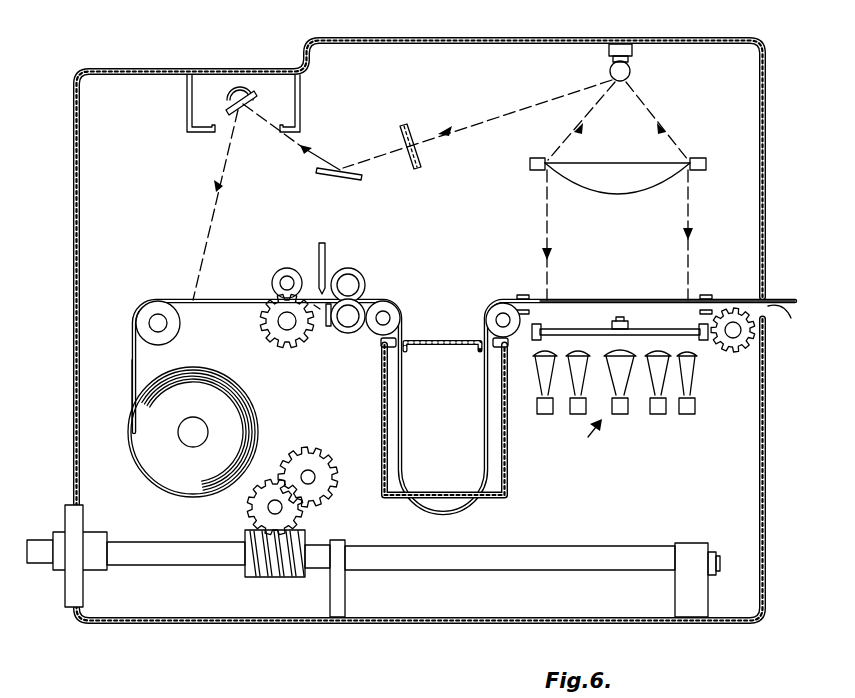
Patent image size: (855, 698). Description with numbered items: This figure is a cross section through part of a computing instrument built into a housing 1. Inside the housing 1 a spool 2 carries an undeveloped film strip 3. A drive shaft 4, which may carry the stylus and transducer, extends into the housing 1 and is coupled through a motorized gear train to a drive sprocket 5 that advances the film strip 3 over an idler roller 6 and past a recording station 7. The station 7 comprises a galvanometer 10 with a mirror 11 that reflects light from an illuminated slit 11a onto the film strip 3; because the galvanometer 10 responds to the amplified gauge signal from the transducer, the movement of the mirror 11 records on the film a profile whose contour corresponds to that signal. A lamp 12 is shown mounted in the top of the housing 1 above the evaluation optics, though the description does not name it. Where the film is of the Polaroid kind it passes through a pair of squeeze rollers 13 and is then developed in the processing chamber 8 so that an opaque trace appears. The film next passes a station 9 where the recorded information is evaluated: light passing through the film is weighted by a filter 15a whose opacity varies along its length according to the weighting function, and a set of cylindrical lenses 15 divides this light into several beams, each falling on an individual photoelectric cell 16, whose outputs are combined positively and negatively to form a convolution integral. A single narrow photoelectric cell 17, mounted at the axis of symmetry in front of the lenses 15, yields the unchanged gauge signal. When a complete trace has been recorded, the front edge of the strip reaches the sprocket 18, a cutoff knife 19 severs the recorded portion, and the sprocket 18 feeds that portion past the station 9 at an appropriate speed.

The housing 1 is at (745, 523).
The spool 2 is at (170, 482).
The film strip 3 is at (133, 372).
The drive shaft 4 is at (55, 546).
The drive sprocket 5 is at (287, 347).
The idler roller 6 is at (137, 325).
The station 7 is at (182, 297).
The processing chamber 8 is at (476, 498).
The station 9 is at (563, 300).
The galvanometer 10 is at (290, 106).
The mirror 11 is at (245, 88).
The illuminated slit 11a is at (406, 126).
The lamp 12 is at (632, 72).
The squeeze rollers 13 is at (360, 280).
The cylindrical lenses 15 is at (700, 370).
The filter 15a is at (672, 334).
The photoelectric cells 16 is at (586, 442).
The photoelectric cell 17 is at (626, 320).
The sprocket 18 is at (733, 352).
The cutoff knife 19 is at (318, 252).